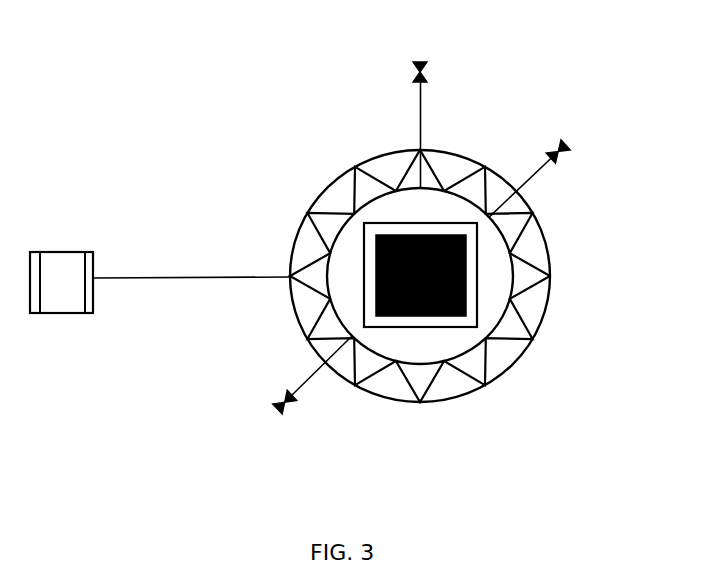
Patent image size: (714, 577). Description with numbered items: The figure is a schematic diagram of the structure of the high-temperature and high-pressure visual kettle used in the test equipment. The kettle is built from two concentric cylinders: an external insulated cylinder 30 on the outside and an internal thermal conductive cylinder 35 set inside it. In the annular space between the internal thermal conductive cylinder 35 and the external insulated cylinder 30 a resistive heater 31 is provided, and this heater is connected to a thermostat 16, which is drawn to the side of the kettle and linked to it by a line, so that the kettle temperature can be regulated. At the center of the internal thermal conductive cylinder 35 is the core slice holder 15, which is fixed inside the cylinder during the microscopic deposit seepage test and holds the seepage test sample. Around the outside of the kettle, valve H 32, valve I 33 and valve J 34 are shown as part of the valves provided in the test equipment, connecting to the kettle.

The core slice holder 15 is at (482, 294).
The thermostat 16 is at (154, 302).
The external insulated cylinder 30 is at (402, 271).
The resistive heater 31 is at (389, 276).
The valve H 32 is at (312, 389).
The valve I 33 is at (460, 110).
The valve J 34 is at (570, 179).
The internal thermal conductive cylinder 35 is at (423, 315).